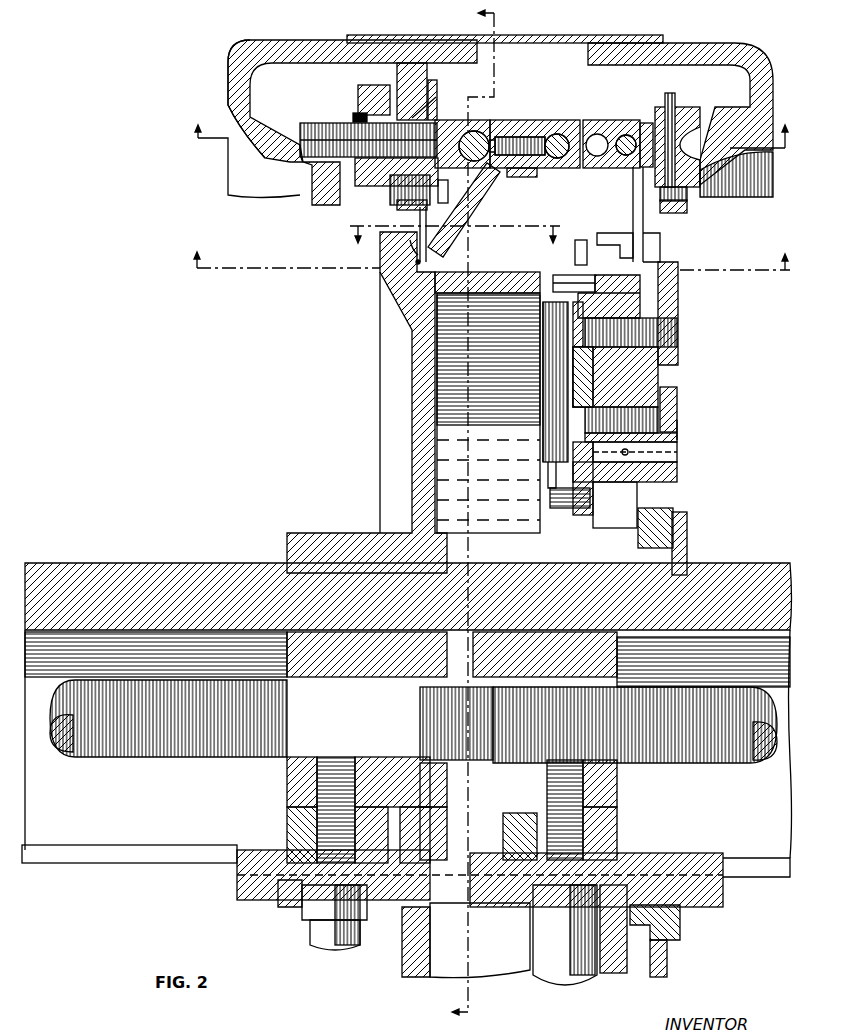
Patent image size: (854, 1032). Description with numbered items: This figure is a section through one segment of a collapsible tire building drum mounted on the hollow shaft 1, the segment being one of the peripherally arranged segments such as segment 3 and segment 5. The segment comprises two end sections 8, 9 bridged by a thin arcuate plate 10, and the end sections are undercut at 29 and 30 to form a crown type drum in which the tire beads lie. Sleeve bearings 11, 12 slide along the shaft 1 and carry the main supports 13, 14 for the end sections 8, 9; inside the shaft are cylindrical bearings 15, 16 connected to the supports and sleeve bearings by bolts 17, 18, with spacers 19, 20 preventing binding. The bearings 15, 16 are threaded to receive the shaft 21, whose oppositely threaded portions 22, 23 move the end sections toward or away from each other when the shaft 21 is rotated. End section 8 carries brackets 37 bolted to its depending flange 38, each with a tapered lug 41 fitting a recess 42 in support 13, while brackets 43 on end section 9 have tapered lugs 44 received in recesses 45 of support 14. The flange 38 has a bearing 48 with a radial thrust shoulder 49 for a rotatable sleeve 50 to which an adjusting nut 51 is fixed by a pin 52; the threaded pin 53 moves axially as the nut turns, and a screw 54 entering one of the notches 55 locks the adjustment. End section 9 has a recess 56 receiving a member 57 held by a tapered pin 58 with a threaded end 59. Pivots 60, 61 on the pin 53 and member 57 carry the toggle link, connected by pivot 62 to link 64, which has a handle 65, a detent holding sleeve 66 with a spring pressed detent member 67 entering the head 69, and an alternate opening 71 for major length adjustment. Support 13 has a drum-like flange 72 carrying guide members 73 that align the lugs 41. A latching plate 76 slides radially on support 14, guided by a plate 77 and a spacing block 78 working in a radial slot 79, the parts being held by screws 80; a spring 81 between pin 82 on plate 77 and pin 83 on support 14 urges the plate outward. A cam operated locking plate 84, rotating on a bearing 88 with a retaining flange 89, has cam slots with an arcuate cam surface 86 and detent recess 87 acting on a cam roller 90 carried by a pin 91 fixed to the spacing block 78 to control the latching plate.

The hollow shaft 1 is at (125, 563).
The drum segment 3 is at (282, 42).
The drum segment 5 is at (491, 150).
The end section 8 is at (237, 65).
The end section 9 is at (755, 72).
The plate section 10 is at (535, 36).
The sleeve bearing 11 is at (245, 885).
The sleeve bearing 12 is at (120, 865).
The main support 13 is at (420, 412).
The main support 14 is at (582, 240).
The cylindrical bearing 15 is at (296, 778).
The cylindrical bearing 16 is at (615, 790).
The bolt 17 is at (323, 945).
The bolt 18 is at (548, 975).
The spacer 19 is at (292, 824).
The spacer 20 is at (615, 838).
The shaft 21 is at (760, 760).
The threaded portion 22 is at (173, 748).
The threaded portion 23 is at (695, 760).
The undercut 29 is at (300, 163).
The undercut 30 is at (735, 190).
The supporting bracket 37 is at (420, 218).
The depending flange 38 is at (406, 76).
The tapered lug 41 is at (412, 256).
The recess 42 is at (416, 264).
The bracket 43 is at (640, 210).
The tapered lug 44 is at (650, 255).
The recess 45 is at (608, 240).
The bearing 48 is at (436, 90).
The radial thrust shoulder 49 is at (438, 104).
The rotatable sleeve 50 is at (322, 180).
The adjusting nut 51 is at (360, 98).
The pin or screw 52 is at (355, 116).
The threaded pin 53 is at (312, 130).
The screw 54 is at (392, 192).
The notch 55 is at (385, 186).
The recess 56 is at (684, 120).
The member 57 is at (700, 125).
The tapered pin 58 is at (668, 100).
The threaded end 59 is at (675, 212).
The pivot 60 is at (476, 130).
The pivot 61 is at (626, 134).
The pivot 62 is at (557, 134).
The link 64 is at (530, 176).
The handle member 65 is at (465, 222).
The detent holding sleeve 66 is at (524, 137).
The detent member 67 is at (480, 135).
The head 69 is at (452, 125).
The opening 71 is at (596, 133).
The drum-like flange 72 is at (490, 275).
The guide member 73 is at (512, 272).
The latching plate 76 is at (670, 302).
The plate 77 is at (575, 385).
The spacing block 78 is at (640, 378).
The radial slot 79 is at (650, 490).
The screw 80 is at (670, 332).
The spring 81 is at (550, 450).
The pin 82 is at (552, 494).
The pin 83 is at (575, 272).
The locking plate 84 is at (678, 395).
The arcuate cam surface 86 is at (680, 420).
The detent recess 87 is at (680, 462).
The bearing 88 is at (688, 528).
The retaining flange 89 is at (680, 510).
The cam roller 90 is at (678, 437).
The pin 91 is at (612, 455).